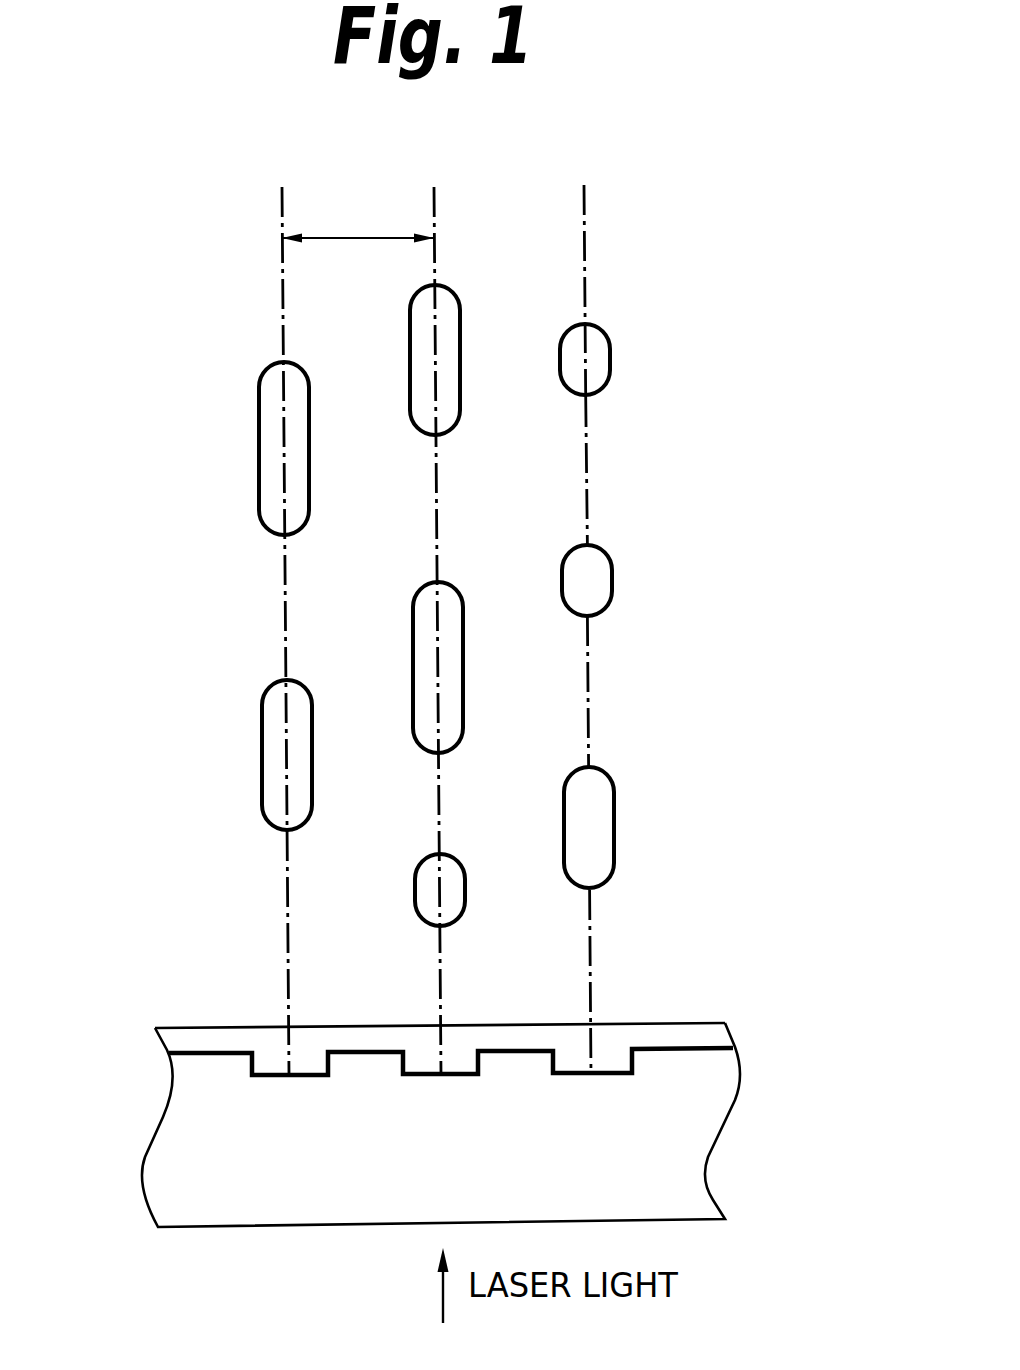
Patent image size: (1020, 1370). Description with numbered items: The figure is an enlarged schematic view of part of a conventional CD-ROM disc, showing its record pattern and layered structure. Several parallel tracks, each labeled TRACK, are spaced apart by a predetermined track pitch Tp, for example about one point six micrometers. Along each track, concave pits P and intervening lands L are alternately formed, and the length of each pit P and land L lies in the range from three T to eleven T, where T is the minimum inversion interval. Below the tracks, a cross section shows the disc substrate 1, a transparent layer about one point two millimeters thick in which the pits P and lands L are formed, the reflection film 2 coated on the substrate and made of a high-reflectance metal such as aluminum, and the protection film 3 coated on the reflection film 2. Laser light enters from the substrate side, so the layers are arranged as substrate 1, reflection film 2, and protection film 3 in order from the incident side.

The disc substrate 1 is at (173, 1127).
The reflection film 2 is at (693, 1047).
The protection film 3 is at (668, 1022).
The pit P is at (597, 362).
The land L is at (600, 471).
The track TRACK is at (586, 258).
The track pitch Tp is at (358, 237).